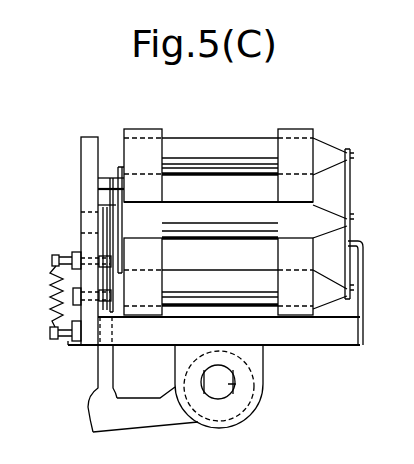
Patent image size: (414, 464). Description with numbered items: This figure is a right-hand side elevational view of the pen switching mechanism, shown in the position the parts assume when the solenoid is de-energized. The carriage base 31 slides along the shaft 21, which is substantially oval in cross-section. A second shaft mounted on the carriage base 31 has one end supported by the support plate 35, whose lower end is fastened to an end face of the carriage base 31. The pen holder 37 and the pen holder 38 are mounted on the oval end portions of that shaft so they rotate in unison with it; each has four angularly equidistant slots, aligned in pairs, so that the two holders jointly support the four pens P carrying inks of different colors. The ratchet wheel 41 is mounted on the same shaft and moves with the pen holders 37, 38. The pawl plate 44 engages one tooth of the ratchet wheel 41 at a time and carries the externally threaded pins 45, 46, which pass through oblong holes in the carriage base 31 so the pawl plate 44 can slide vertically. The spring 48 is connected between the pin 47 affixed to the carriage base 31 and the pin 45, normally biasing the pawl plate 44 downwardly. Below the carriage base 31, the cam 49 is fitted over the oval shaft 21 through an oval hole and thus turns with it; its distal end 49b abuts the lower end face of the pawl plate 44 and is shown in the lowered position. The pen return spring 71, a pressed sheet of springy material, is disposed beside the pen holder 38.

The shaft 21 is at (262, 392).
The carriage base 31 is at (322, 342).
The support plate 35 is at (364, 288).
The pen holder 37 is at (150, 129).
The pen holder 38 is at (295, 130).
The ratchet wheel 41 is at (112, 177).
The pawl plate 44 is at (102, 207).
The externally threaded pin 45 is at (67, 252).
The externally threaded pin 46 is at (72, 296).
The pin 47 is at (70, 341).
The spring 48 is at (57, 278).
The cam 49 is at (170, 418).
The distal end 49b is at (97, 396).
The pen return spring 71 is at (352, 188).
The pens P is at (232, 215).